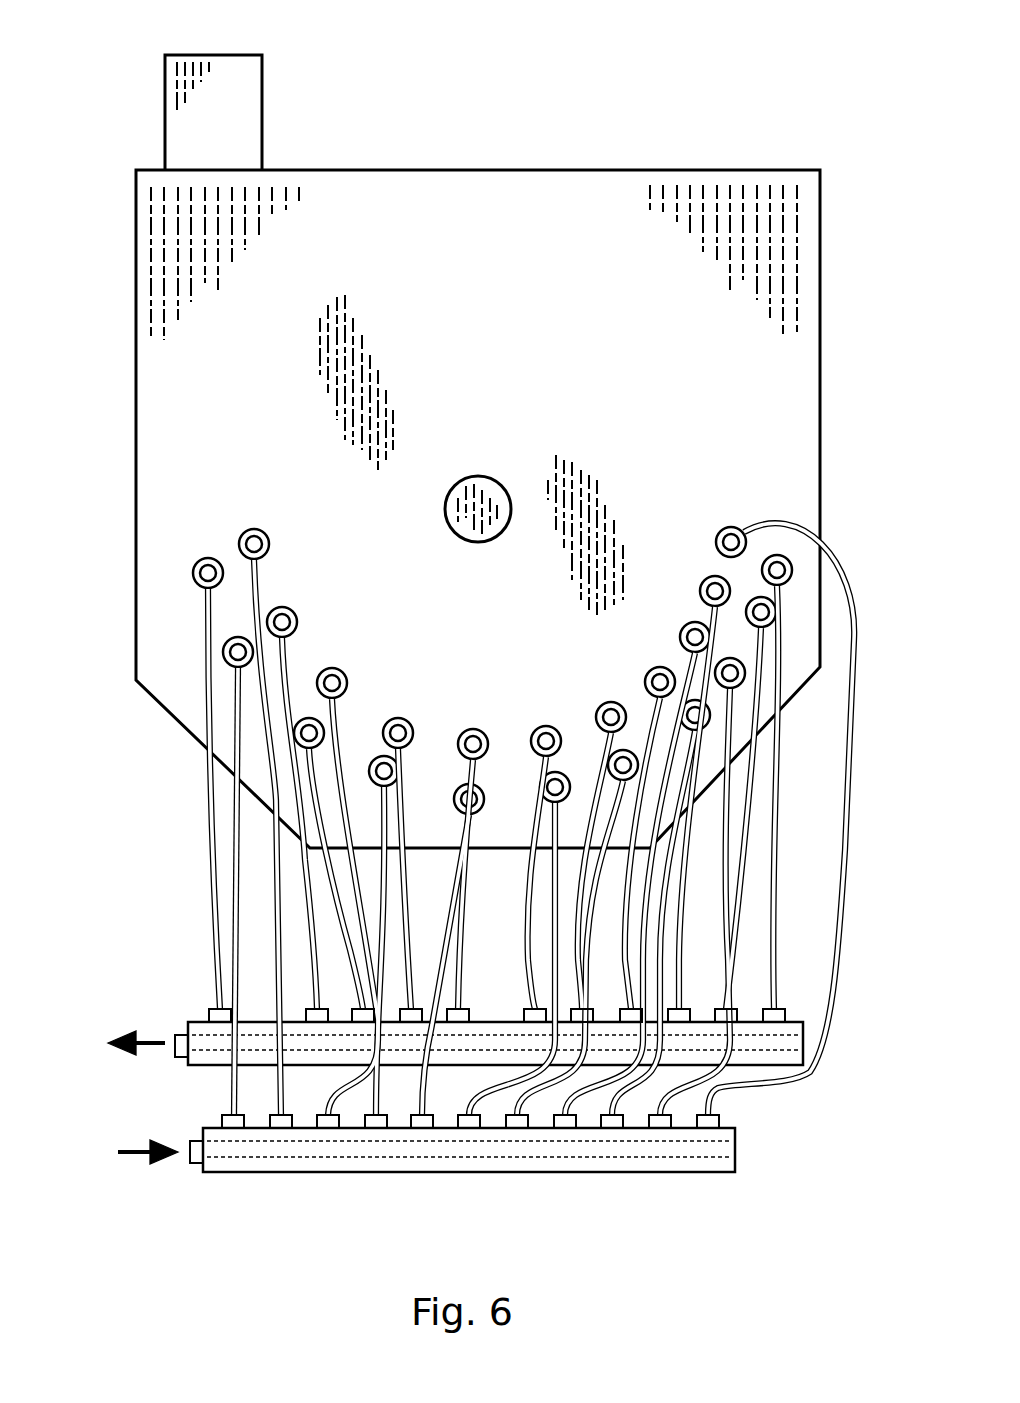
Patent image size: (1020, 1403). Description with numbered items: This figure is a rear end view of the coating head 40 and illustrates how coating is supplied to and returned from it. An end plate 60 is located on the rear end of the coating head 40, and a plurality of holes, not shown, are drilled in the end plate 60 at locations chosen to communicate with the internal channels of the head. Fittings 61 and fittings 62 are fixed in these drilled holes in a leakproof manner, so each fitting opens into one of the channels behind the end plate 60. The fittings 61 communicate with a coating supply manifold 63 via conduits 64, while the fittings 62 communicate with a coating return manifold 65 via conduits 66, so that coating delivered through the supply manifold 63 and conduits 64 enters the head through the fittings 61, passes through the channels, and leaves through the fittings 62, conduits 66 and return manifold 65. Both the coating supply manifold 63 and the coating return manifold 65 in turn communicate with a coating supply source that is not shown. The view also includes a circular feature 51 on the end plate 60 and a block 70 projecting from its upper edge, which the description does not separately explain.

The coating head 40 is at (484, 70).
The opening 51 is at (478, 482).
The end plate 60 is at (548, 205).
The fittings 61 is at (230, 580).
The fittings 62 is at (206, 558).
The coating supply manifold 63 is at (222, 1173).
The conduits 64 is at (240, 1100).
The coating return manifold 65 is at (218, 1066).
The conduits 66 is at (212, 880).
The extension block 70 is at (141, 96).